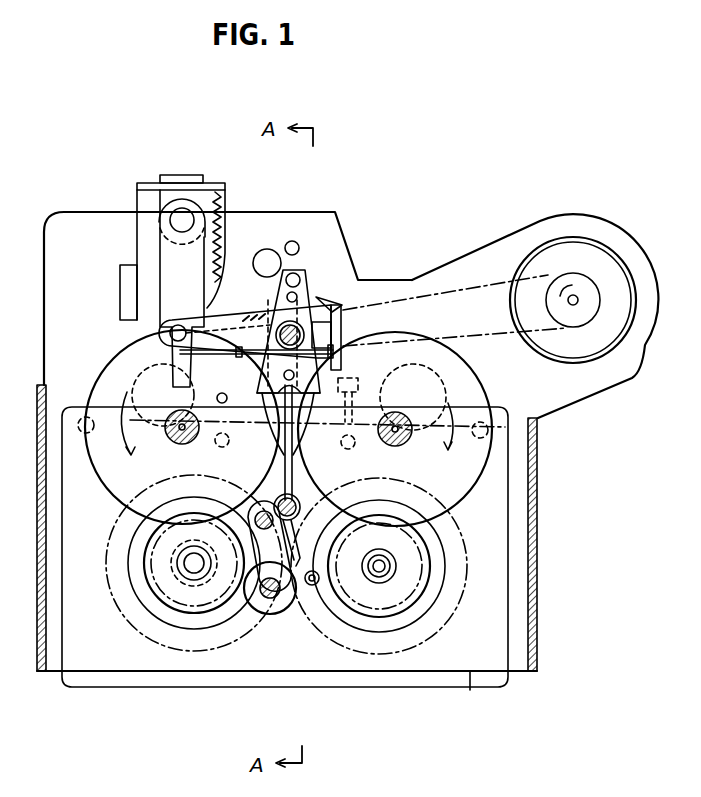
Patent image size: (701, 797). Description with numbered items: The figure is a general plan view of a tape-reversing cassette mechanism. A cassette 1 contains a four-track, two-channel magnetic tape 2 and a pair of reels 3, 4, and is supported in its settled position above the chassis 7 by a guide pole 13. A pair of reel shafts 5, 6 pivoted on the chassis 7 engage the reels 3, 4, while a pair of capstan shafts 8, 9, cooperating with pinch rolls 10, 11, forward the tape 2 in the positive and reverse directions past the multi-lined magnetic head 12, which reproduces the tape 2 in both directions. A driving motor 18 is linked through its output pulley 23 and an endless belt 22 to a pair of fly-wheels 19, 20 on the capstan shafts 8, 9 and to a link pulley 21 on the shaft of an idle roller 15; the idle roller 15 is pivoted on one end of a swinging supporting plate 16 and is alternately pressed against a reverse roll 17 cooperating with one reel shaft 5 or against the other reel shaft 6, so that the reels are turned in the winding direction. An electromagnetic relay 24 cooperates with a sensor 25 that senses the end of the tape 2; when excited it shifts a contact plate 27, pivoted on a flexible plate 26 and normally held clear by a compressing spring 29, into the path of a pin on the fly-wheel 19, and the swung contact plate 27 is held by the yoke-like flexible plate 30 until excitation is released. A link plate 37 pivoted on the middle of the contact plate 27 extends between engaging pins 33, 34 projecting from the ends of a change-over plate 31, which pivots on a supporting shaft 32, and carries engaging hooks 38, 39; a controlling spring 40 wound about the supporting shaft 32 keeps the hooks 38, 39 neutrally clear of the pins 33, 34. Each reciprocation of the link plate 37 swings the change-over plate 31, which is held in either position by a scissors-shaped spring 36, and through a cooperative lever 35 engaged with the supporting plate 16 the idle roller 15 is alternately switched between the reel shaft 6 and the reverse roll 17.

The cassette 1 is at (470, 690).
The magnetic tape 2 is at (470, 517).
The reel 3 is at (182, 650).
The reel 4 is at (343, 648).
The reel shaft 5 is at (185, 570).
The reel shaft 6 is at (388, 572).
The chassis 7 is at (538, 622).
The capstan shaft 8 is at (173, 437).
The capstan shaft 9 is at (440, 440).
The pinch roll 10 is at (137, 373).
The pinch roll 11 is at (450, 396).
The multi-lined magnetic head 12 is at (284, 458).
The guide pole 13 is at (222, 448).
The idle roller 15 is at (312, 587).
The swinging supporting plate 16 is at (250, 532).
The reverse roll 17 is at (268, 598).
The driving motor 18 is at (612, 280).
The fly-wheel 19 is at (88, 390).
The fly-wheel 20 is at (224, 404).
The link pulley 21 is at (345, 612).
The endless belt 22 is at (462, 292).
The output pulley 23 is at (576, 286).
The electromagnetic relay 24 is at (150, 212).
The sensor 25 is at (367, 388).
The flexible plate 26 is at (160, 195).
The contact plate 27 is at (165, 258).
The compressing spring 29 is at (226, 206).
The flexible plate (yoke) 30 is at (120, 290).
The change-over plate 31 is at (303, 293).
The supporting shaft 32 is at (302, 322).
The engaging pin 33 is at (300, 268).
The engaging pin 34 is at (283, 377).
The cooperative lever 35 is at (296, 456).
The scissors-shaped spring 36 is at (258, 252).
The link plate 37 is at (243, 312).
The engaging hook 38 is at (340, 302).
The engaging hook 39 is at (343, 348).
The controlling spring 40 is at (265, 351).